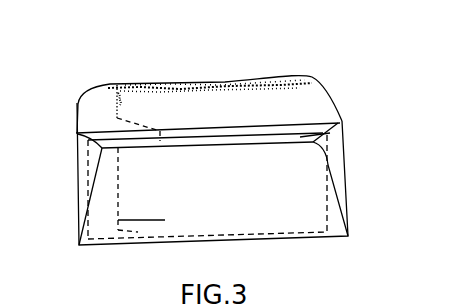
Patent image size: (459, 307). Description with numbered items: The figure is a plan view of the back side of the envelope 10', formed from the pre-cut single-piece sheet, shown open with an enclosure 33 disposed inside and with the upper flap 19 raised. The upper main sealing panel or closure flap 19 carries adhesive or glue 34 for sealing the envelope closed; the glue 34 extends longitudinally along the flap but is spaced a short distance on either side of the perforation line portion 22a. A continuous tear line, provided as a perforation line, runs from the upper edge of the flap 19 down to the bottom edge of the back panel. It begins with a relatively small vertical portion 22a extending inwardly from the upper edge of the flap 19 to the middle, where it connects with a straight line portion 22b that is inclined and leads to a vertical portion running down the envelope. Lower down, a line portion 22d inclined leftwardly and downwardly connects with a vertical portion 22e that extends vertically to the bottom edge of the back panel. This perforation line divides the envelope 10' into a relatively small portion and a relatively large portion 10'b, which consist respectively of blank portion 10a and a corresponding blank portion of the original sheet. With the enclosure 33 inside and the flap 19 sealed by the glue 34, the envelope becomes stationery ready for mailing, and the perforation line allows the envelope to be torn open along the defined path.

The envelope 10' is at (245, 160).
The blank portion 10a is at (77, 177).
The relatively large portion 10'b is at (368, 183).
The closure flap 19 is at (283, 124).
The vertical portion of perforation line 22a is at (112, 102).
The straight line portion of perforation line 22b is at (141, 126).
The inclined line portion of perforation line 22d is at (140, 233).
The vertical portion of perforation line 22e is at (123, 183).
The enclosure 33 is at (300, 137).
The glue 34 is at (235, 84).